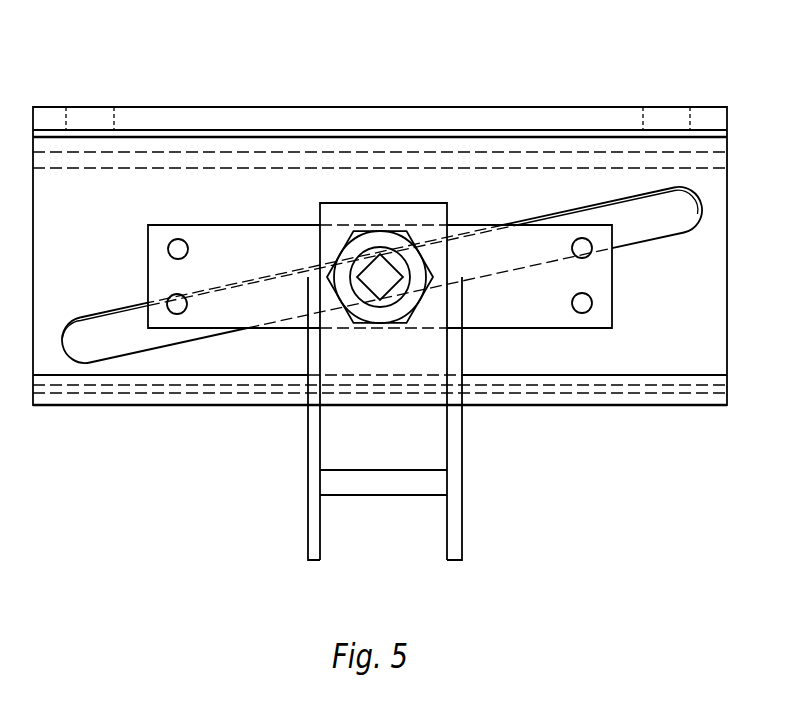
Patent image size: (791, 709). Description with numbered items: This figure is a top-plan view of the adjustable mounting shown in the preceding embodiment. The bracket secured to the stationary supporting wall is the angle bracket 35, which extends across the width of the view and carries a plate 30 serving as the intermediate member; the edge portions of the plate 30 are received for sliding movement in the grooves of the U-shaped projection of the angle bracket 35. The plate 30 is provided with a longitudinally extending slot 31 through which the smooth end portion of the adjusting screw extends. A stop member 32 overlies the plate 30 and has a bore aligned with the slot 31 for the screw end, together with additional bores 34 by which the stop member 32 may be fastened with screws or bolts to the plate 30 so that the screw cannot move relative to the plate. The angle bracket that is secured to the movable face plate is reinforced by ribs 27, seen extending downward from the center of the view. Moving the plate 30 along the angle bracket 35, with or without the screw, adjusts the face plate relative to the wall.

The ribs 27 is at (316, 529).
The plate 30 is at (645, 345).
The longitudinally extending slot 31 is at (627, 215).
The stop member 32 is at (251, 235).
The additional bores 34 is at (176, 239).
The angle bracket 35 is at (498, 107).